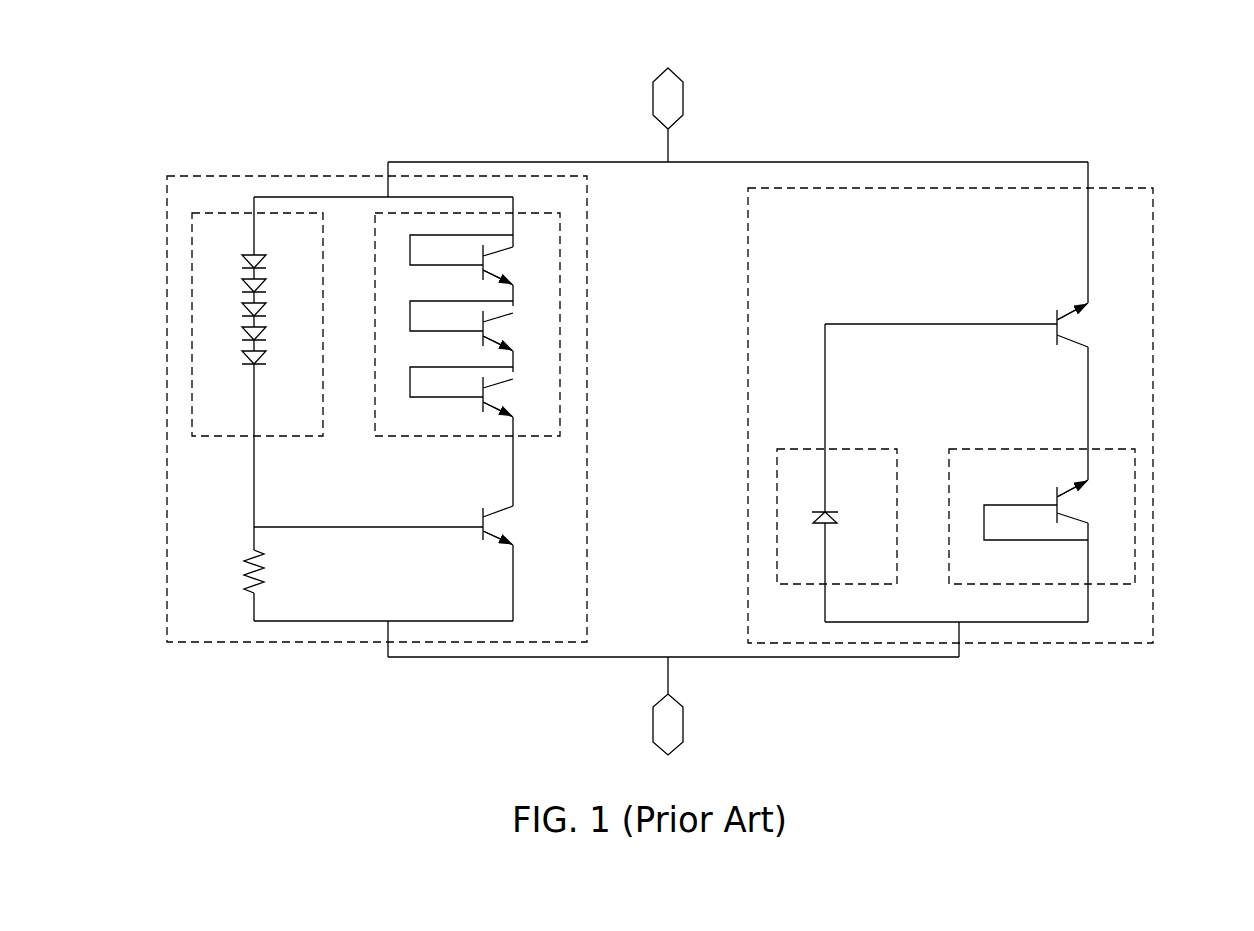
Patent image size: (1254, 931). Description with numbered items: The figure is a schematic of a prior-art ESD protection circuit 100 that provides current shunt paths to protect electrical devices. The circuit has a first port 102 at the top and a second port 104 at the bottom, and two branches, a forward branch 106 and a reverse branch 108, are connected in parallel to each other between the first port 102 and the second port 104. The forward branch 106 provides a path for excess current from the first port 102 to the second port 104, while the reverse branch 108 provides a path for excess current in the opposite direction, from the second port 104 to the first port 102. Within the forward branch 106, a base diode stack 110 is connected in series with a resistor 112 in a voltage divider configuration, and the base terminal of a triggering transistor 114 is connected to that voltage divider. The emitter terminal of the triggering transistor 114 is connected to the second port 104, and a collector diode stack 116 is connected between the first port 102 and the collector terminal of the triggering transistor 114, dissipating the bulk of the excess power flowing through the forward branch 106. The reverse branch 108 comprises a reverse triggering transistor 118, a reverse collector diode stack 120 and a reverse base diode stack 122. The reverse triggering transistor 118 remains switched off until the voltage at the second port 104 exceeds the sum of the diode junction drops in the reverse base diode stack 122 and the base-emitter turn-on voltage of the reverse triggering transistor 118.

The ESD protection circuit 100 is at (882, 130).
The first port 102 is at (683, 98).
The second port 104 is at (683, 724).
The forward branch 106 is at (238, 176).
The reverse branch 108 is at (1153, 415).
The base diode stack 110 is at (254, 436).
The resistor 112 is at (252, 567).
The triggering transistor 114 is at (482, 540).
The collector diode stack 116 is at (387, 437).
The reverse triggering transistor 118 is at (1066, 306).
The reverse collector diode stack 120 is at (1042, 449).
The reverse base diode stack 122 is at (833, 449).